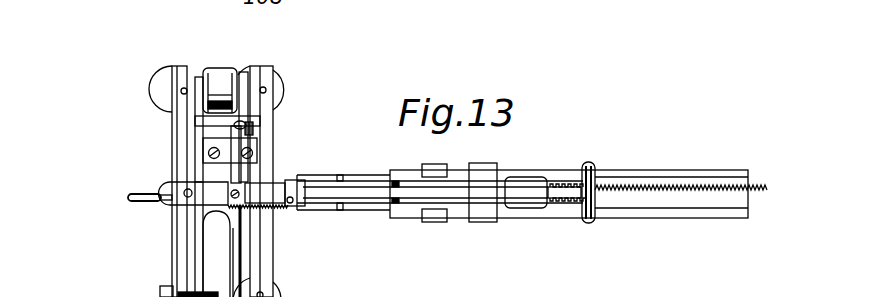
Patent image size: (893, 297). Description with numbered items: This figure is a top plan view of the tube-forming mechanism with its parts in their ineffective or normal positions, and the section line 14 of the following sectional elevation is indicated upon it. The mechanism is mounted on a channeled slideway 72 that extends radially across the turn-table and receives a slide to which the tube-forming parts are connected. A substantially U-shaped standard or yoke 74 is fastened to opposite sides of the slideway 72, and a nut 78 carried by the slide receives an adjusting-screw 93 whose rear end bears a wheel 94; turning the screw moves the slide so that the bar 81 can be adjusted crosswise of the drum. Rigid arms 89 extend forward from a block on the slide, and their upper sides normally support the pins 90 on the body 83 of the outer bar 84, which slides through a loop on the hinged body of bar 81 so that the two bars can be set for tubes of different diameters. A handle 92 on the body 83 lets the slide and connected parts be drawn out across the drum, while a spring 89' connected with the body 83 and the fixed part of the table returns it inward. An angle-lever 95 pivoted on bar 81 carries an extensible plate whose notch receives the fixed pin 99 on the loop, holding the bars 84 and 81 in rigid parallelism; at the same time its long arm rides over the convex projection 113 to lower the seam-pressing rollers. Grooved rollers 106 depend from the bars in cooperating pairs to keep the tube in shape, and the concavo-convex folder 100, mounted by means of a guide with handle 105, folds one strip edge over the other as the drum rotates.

The roller 14 is at (215, 65).
The vertically-disposed rollers 106 is at (156, 89).
The projection 113 is at (212, 128).
The bar 84 is at (181, 136).
The bar 81 is at (273, 130).
The body 83 is at (212, 192).
The handle 92 is at (127, 197).
The angle-lever 95 is at (248, 176).
The fixed pin or detent 99 is at (292, 198).
The pins 90 is at (347, 175).
The folder 100 is at (217, 247).
The rigid arms 89 is at (440, 207).
The handle 105 is at (193, 287).
The standard or yoke 74 is at (484, 214).
The nut 78 is at (537, 207).
The adjusting-screw 93 is at (566, 187).
The spring 89' is at (681, 164).
The wheel 94 is at (582, 225).
The slideway 72 is at (666, 218).